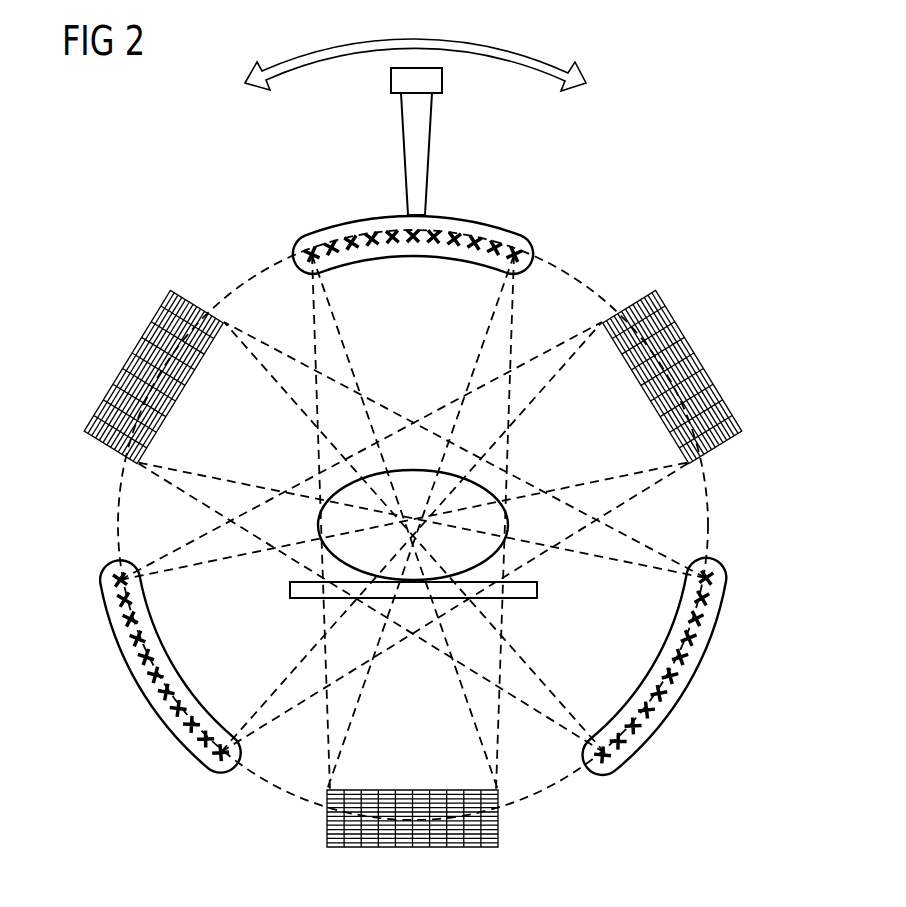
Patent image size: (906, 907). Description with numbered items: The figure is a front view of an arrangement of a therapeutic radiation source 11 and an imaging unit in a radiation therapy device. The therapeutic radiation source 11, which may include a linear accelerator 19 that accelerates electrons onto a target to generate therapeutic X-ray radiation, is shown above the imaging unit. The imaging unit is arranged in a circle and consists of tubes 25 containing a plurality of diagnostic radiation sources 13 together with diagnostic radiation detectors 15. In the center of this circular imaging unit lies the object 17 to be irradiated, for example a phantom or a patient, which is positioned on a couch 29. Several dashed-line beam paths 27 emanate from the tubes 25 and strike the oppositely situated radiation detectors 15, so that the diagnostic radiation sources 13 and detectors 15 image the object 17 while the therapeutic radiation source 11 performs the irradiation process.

The therapeutic radiation source 11 is at (373, 120).
The diagnostic radiation sources 13 is at (357, 238).
The diagnostic radiation detectors 15 is at (138, 353).
The object 17 is at (420, 468).
The linear accelerator 19 is at (430, 130).
The tubes 25 is at (313, 234).
The beam paths 27 is at (313, 350).
The couch 29 is at (290, 590).